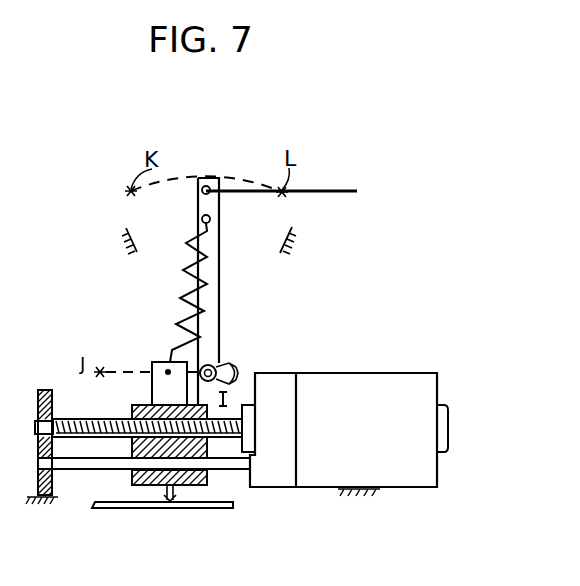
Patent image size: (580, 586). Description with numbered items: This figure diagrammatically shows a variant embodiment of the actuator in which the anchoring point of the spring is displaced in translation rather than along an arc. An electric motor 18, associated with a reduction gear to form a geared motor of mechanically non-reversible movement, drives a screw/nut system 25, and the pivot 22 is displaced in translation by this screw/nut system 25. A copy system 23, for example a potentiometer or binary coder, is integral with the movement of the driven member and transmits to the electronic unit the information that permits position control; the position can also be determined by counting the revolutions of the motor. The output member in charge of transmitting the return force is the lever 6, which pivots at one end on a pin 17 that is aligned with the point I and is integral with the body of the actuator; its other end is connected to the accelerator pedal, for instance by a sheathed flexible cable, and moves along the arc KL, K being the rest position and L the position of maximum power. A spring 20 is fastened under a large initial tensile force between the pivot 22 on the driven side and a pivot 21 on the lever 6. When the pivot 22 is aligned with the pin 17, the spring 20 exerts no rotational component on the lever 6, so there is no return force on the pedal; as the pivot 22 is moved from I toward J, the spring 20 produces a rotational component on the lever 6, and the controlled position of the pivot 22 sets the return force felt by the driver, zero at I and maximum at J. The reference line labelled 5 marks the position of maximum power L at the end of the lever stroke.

The reference line 5 is at (344, 190).
The lever 6 is at (220, 296).
The pin 17 is at (214, 366).
The electric motor 18 is at (383, 372).
The spring 20 is at (179, 301).
The pivot 21 is at (211, 219).
The pivot 22 is at (166, 371).
The copy system 23 is at (190, 509).
The screw/nut system 25 is at (131, 410).